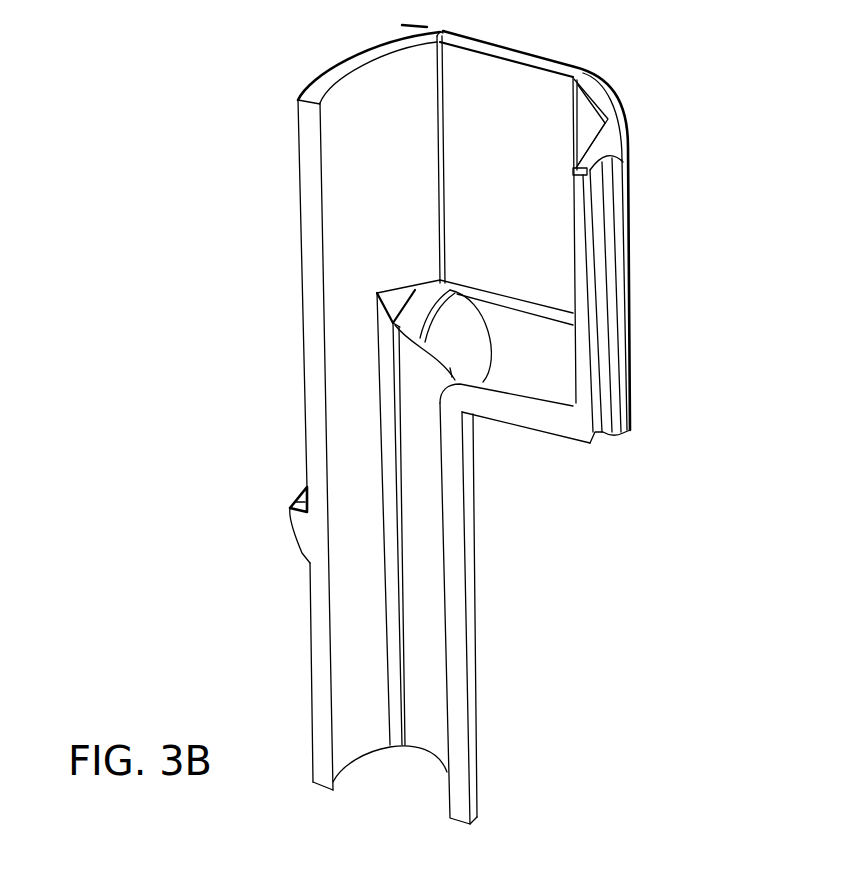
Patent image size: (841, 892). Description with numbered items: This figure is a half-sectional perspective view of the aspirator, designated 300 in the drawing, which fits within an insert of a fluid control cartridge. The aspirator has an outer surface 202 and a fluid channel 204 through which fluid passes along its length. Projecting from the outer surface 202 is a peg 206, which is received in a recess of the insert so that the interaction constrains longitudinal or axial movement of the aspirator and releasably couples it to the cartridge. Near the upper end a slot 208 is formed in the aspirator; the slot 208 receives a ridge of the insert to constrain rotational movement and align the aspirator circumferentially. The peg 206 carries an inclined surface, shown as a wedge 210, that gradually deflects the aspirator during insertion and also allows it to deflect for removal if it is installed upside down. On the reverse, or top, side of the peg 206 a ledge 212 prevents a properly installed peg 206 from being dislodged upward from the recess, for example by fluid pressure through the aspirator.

The clip assembly 300 is at (780, 205).
The outer surface 202 is at (457, 580).
The fluid channel 204 is at (395, 792).
The peg 206 is at (302, 524).
The slot 208 is at (603, 418).
The wedge 210 is at (305, 563).
The ledge 212 is at (295, 502).